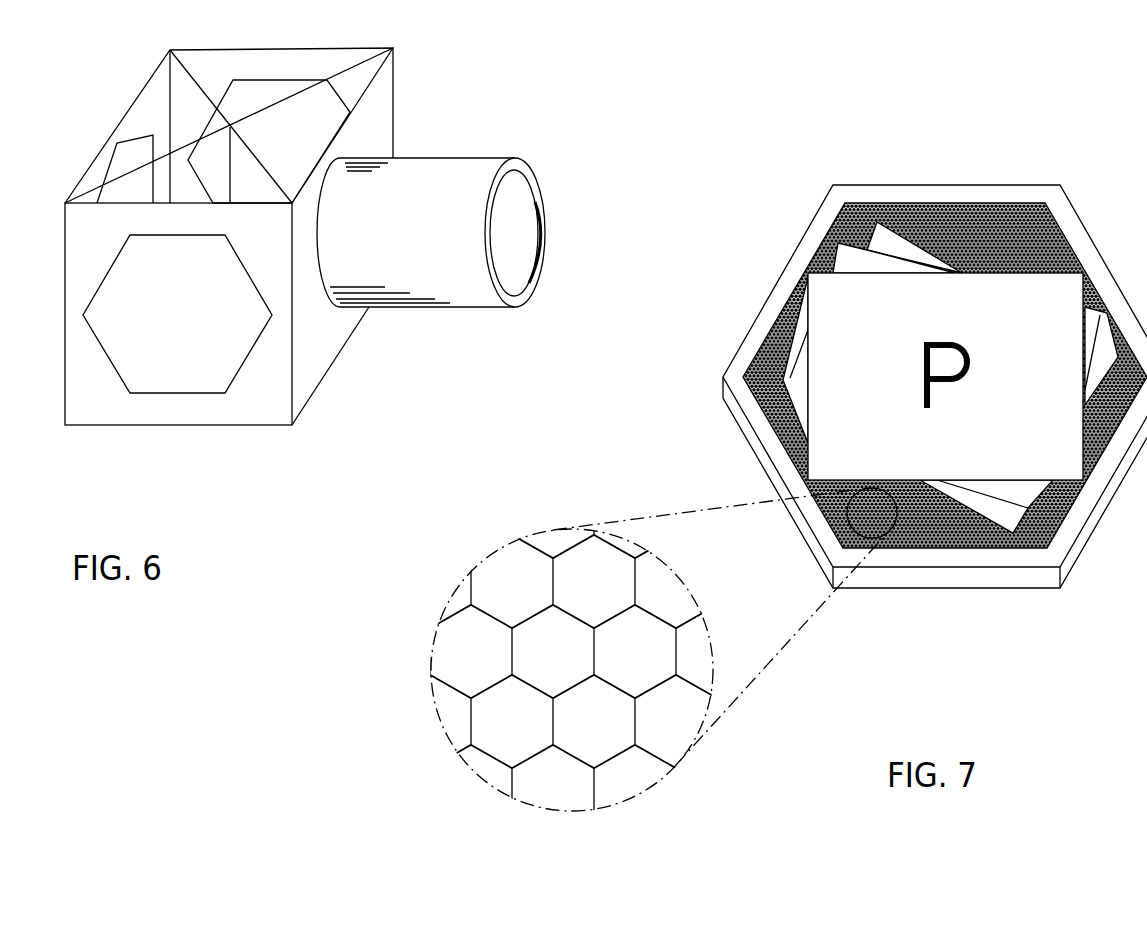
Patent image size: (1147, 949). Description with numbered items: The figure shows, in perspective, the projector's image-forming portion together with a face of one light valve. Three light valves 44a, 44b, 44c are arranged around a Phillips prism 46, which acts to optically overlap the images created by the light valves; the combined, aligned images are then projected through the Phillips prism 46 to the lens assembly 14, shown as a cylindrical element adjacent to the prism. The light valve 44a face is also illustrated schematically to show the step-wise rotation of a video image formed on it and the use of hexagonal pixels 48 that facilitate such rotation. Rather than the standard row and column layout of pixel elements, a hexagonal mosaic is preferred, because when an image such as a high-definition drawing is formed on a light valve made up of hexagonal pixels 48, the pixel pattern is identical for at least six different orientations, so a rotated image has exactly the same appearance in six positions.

In FIG. 6, the lens assembly 14 is at (473, 158).
In FIG. 6, the light valve 44a is at (167, 393).
In FIG. 7, the light valve 44a is at (1074, 563).
In FIG. 6, the light valve 44b is at (134, 137).
In FIG. 6, the light valve 44c is at (290, 80).
In FIG. 6, the Phillips prism 46 is at (380, 102).
In FIG. 7, the hexagonal pixels 48 is at (508, 775).